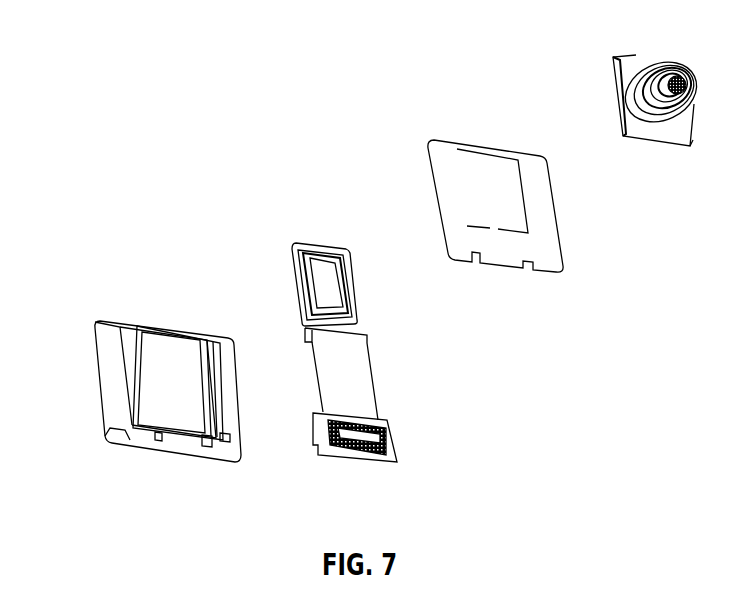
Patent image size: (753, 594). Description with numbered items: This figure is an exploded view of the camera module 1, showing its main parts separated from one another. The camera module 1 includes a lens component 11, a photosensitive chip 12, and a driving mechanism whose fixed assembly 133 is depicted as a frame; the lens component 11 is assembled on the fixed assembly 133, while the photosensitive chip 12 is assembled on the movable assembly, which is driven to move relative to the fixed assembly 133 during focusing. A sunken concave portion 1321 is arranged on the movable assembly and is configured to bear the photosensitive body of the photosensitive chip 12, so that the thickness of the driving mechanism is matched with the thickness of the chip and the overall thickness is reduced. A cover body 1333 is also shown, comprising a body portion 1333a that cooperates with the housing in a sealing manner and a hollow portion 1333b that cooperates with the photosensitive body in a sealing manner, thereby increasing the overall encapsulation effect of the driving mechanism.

The camera module 1 is at (111, 89).
The lens component 11 is at (633, 72).
The photosensitive chip 12 is at (318, 260).
The fixed assembly 133 is at (115, 332).
The concave portion 1321 is at (160, 330).
The cover body 1333 is at (323, 64).
The body portion 1333a is at (449, 195).
The hollow portion 1333b is at (485, 172).